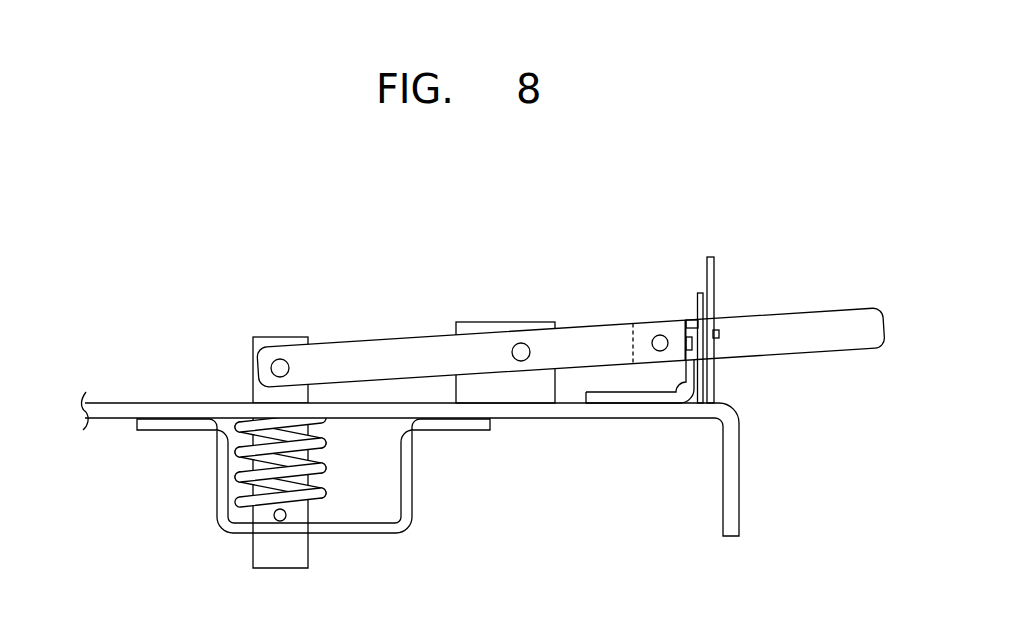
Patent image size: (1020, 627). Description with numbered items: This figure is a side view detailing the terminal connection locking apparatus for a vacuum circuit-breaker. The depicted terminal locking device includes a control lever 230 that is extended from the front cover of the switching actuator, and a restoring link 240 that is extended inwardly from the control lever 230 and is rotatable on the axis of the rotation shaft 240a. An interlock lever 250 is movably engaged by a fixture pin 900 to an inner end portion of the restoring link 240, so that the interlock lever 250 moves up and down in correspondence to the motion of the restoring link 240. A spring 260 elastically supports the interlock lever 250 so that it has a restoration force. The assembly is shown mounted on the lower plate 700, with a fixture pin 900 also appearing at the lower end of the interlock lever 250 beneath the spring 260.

The control lever 230 is at (815, 319).
The restoring link 240 is at (393, 340).
The rotation shaft 240a is at (520, 343).
The interlock lever 250 is at (263, 337).
The spring 260 is at (240, 452).
The lower plate 700 is at (732, 523).
The fixture pin 900 is at (280, 358).